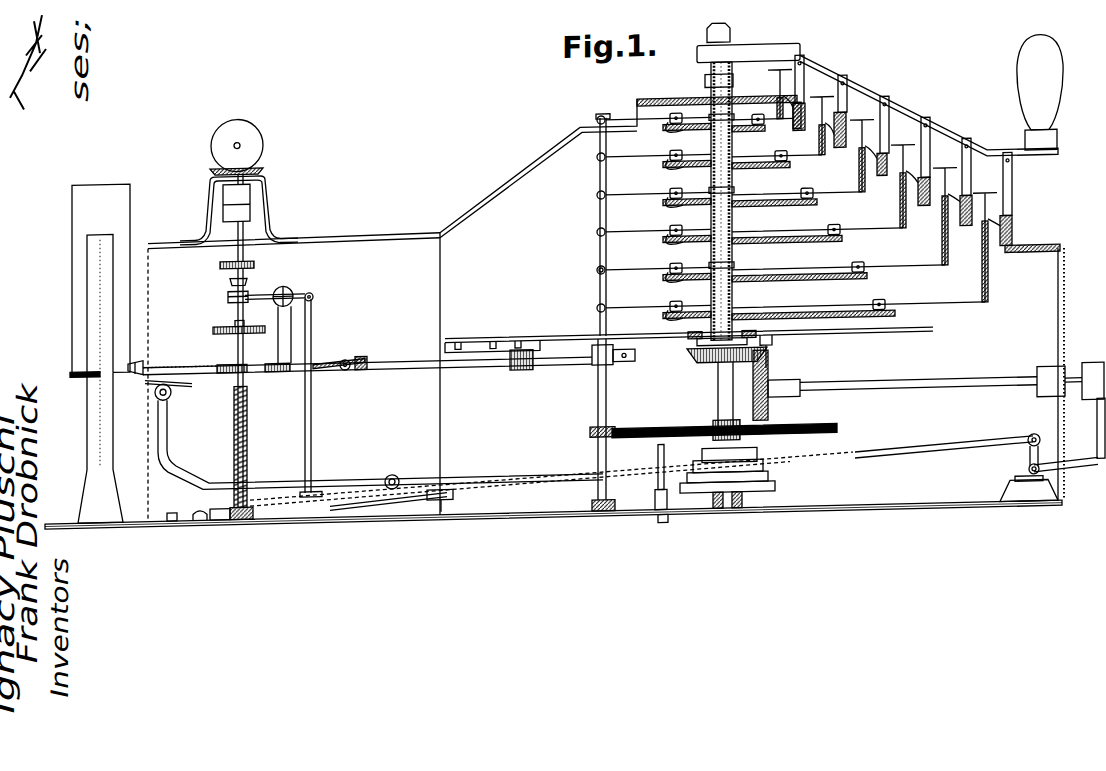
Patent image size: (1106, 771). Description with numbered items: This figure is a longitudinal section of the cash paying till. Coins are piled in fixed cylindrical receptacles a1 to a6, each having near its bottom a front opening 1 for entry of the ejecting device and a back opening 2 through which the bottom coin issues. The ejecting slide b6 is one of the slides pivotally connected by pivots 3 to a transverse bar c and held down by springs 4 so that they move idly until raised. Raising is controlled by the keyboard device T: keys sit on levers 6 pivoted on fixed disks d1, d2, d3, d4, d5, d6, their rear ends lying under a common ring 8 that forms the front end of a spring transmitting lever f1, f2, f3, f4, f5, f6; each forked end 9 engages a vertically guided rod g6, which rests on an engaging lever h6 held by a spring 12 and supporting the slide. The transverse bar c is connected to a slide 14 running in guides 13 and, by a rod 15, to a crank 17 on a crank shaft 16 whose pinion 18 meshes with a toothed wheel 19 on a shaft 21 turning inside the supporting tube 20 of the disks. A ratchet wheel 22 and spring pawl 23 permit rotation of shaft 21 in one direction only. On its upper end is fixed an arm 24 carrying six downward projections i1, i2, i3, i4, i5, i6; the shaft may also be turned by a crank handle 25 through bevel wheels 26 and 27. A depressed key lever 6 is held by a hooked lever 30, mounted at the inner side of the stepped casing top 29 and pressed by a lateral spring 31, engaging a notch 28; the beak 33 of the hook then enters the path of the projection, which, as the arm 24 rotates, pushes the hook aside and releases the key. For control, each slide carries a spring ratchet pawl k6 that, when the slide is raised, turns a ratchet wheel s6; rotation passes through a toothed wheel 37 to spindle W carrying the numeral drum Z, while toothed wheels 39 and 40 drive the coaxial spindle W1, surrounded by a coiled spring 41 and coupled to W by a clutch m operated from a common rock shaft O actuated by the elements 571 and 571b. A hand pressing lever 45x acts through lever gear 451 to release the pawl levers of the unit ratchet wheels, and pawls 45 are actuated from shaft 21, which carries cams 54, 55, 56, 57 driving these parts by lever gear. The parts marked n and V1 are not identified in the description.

The front opening 1 is at (131, 355).
The back opening 2 is at (72, 362).
The pivots 3 is at (343, 364).
The springs 4 is at (343, 352).
The key lever 6 is at (980, 327).
The ring 8 is at (734, 120).
The slotted or forked end 9 is at (598, 159).
The springs 12 is at (450, 494).
The guides 13 is at (482, 338).
The slide 14 is at (518, 368).
The rod 15 is at (560, 365).
The crank shaft 16 is at (598, 410).
The crank 17 is at (635, 358).
The toothed pinion 18 is at (590, 434).
The toothed wheel 19 is at (684, 429).
The supporting tube 20 is at (711, 188).
The shaft 21 is at (732, 212).
The ratchet wheel 22 is at (697, 345).
The spring pawl 23 is at (773, 352).
The arm 24 is at (843, 68).
The crank handle 25 is at (1092, 374).
The bevel wheel 26 is at (768, 384).
The bevel wheel 27 is at (702, 365).
The notch or shoulder 28 is at (776, 78).
The top of the casing 29 is at (673, 92).
The hooked lever 30 is at (800, 135).
The lateral spring 31 is at (935, 244).
The beak 33 is at (842, 132).
The toothed wheel 37 is at (220, 257).
The toothed wheel 39 is at (214, 320).
The toothed wheel 40 is at (246, 314).
The coiled spring 41 is at (234, 416).
The pawls 45 is at (213, 500).
The lever gear 451 is at (918, 456).
The pressing lever 45x is at (1086, 480).
The cam 54 is at (776, 490).
The cam 55 is at (769, 480).
The cam 56 is at (764, 468).
The cam 57 is at (758, 455).
The lever gear 571 is at (312, 310).
The pin 571b is at (656, 466).
The coin receptacle a1 is at (72, 205).
The coin receptacle a6 is at (90, 322).
The ejecting slide b6 is at (183, 377).
The transverse bar c is at (361, 365).
The fixed disk d1 is at (895, 321).
The fixed disk d2 is at (832, 286).
The fixed disk d3 is at (823, 248).
The fixed disk d4 is at (787, 211).
The fixed disk d5 is at (768, 173).
The fixed disk d6 is at (752, 136).
The transmitting lever f1 is at (650, 308).
The transmitting lever f2 is at (650, 270).
The transmitting lever f3 is at (652, 232).
The transmitting lever f4 is at (652, 195).
The transmitting lever f5 is at (661, 157).
The transmitting lever f6 is at (633, 120).
The vertically movable rod g6 is at (598, 273).
The engaging lever h6 is at (335, 480).
The downward extension i1 is at (1012, 189).
The downward extension i2 is at (973, 162).
The downward extension i3 is at (932, 138).
The downward extension i4 is at (891, 115).
The downward extension i5 is at (849, 96).
The downward extension i6 is at (806, 72).
The spring ratchet pawl k6 is at (277, 357).
The clutch device m is at (226, 289).
The pivot bracket n is at (160, 392).
The rock shaft O is at (279, 317).
The ratchet wheel s6 is at (227, 359).
The keyboard device T is at (887, 250).
The bell V1 is at (241, 137).
The spindle W is at (244, 226).
The spindle W1 is at (244, 442).
The numeral drum Z is at (212, 193).